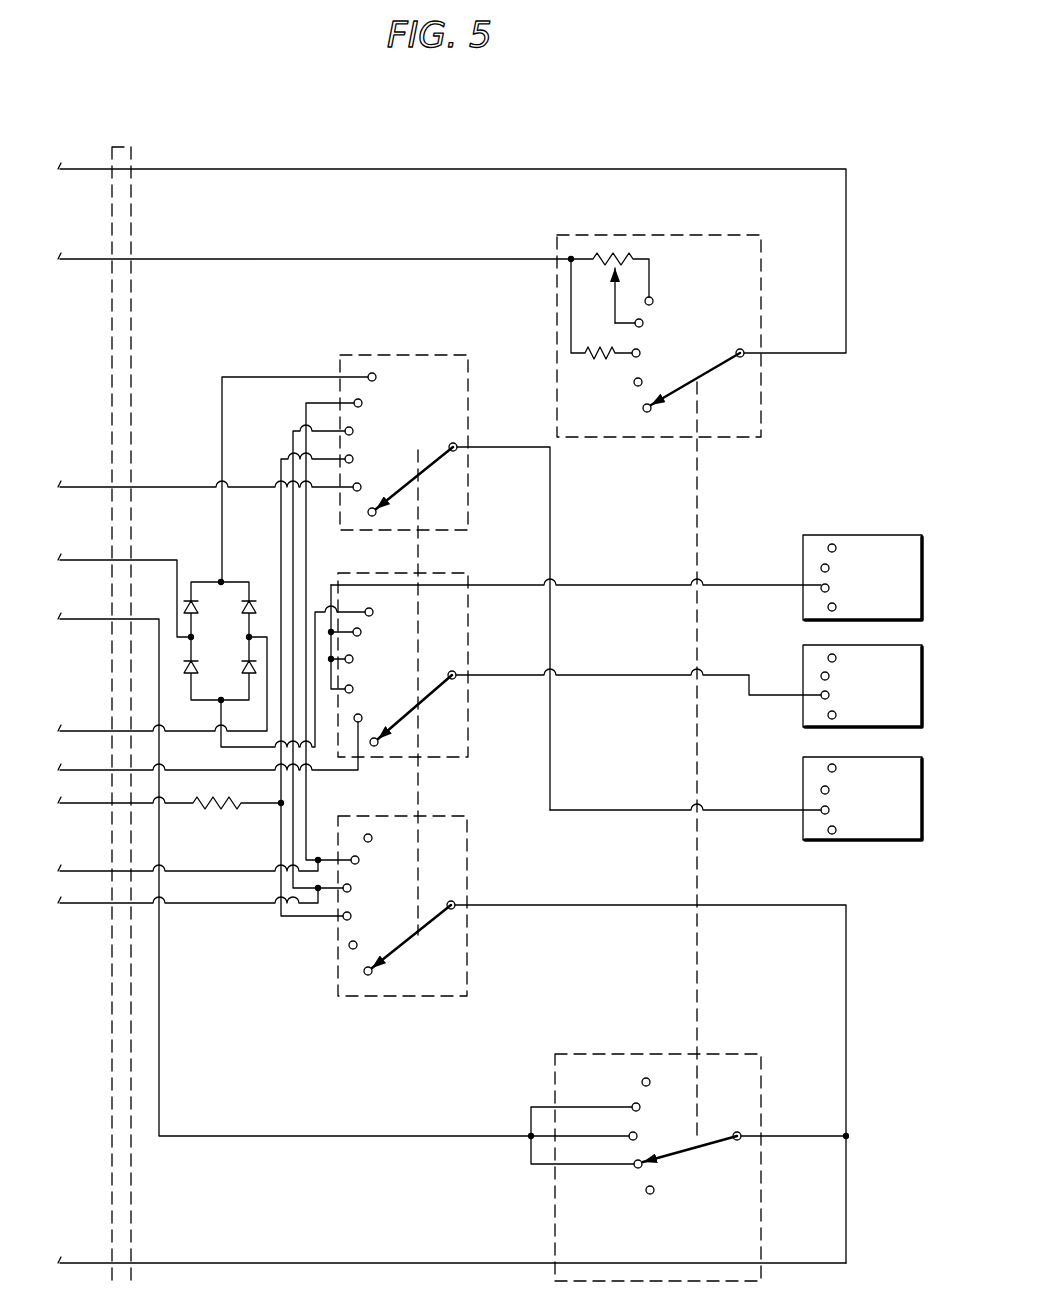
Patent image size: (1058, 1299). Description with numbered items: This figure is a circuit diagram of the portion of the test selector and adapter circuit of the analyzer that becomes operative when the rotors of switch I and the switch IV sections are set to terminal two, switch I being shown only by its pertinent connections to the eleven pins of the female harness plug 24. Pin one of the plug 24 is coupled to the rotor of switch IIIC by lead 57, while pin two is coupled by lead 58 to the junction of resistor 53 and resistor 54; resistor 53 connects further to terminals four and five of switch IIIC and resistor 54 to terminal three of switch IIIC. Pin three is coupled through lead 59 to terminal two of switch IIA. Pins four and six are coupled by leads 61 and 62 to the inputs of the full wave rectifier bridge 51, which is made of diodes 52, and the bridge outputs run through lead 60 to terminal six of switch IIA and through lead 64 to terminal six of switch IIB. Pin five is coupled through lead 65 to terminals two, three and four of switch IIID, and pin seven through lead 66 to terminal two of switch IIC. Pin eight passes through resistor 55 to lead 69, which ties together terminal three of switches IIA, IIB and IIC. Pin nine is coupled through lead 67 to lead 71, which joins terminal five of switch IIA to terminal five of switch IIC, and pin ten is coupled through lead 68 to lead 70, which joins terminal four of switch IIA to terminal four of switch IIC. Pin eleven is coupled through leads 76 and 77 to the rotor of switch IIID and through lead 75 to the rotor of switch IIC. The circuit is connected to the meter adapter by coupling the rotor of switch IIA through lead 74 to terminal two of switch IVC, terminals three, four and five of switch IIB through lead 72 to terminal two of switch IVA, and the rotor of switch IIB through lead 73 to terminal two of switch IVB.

The female harness plug 24 is at (100, 118).
The switch I is at (130, 148).
The full wave rectifier bridge 51 is at (224, 663).
The diodes 52 is at (243, 607).
The resistor 53 is at (616, 253).
The resistor 54 is at (603, 362).
The resistor 55 is at (224, 808).
The lead 57 is at (362, 168).
The conductor to pin 2 58 is at (362, 253).
The lead 59 is at (173, 483).
The lead 60 is at (222, 521).
The lead 61 is at (173, 559).
The lead 62 is at (203, 732).
The lead 64 is at (224, 749).
The lead 65 is at (160, 612).
The lead 66 is at (204, 772).
The lead 67 is at (252, 870).
The lead 68 is at (197, 903).
The lead 69 is at (281, 560).
The lead 70 is at (295, 516).
The lead 71 is at (306, 568).
The lead 72 is at (661, 585).
The lead 73 is at (664, 672).
The lead 74 is at (664, 806).
The lead 75 is at (846, 1041).
The lead 76 is at (806, 1142).
The lead 77 is at (277, 1258).
The switch IIA is at (425, 366).
The switch IIB is at (452, 578).
The switch IIC is at (450, 826).
The switch IIIC is at (664, 315).
The switch IIID is at (730, 1058).
The switch IVA is at (898, 520).
The switch IVB is at (795, 649).
The switch IVC is at (795, 772).